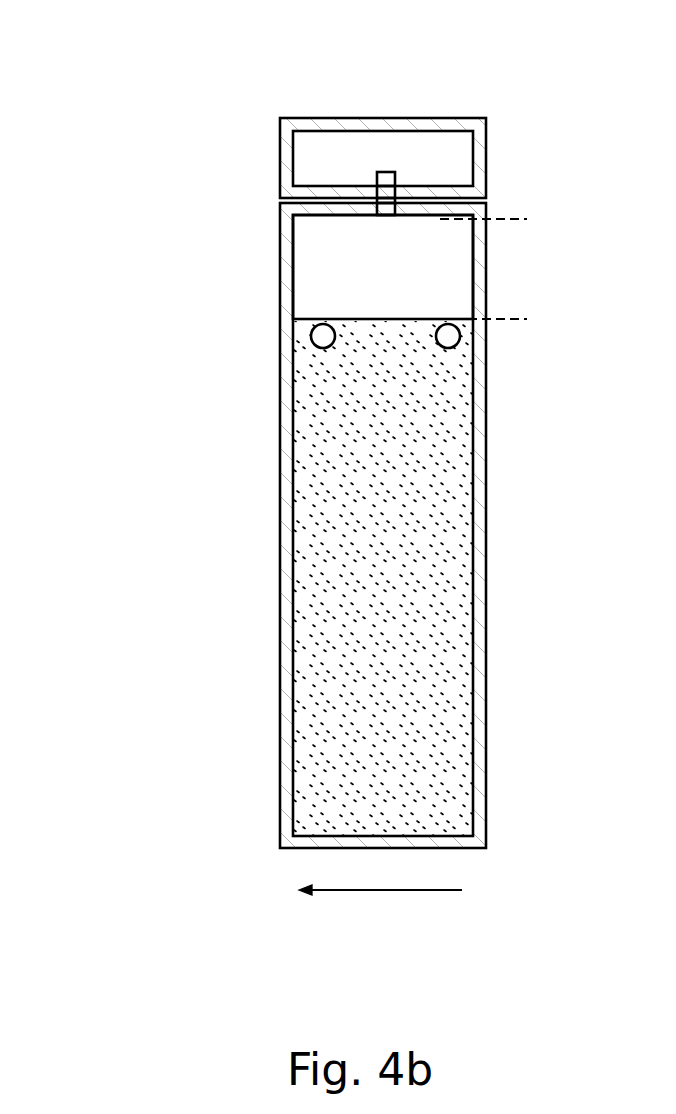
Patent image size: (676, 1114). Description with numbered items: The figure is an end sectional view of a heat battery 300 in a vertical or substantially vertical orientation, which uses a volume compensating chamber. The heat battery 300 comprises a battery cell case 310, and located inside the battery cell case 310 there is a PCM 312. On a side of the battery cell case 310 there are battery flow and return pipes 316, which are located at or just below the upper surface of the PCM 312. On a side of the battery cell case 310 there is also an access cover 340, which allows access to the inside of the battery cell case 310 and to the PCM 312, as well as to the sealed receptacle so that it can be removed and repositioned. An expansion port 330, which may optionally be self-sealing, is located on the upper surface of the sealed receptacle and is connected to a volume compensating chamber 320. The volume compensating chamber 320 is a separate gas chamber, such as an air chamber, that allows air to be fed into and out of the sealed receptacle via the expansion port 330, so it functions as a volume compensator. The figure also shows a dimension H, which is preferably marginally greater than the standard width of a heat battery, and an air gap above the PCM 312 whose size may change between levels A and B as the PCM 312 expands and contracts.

The heat battery 300 is at (135, 581).
The battery cell case 310 is at (483, 707).
The PCM 312 is at (457, 473).
The battery flow and return pipes 316 is at (311, 334).
The volume compensating chamber 320 is at (402, 118).
The expansion port 330 is at (385, 178).
The access cover 340 is at (357, 280).